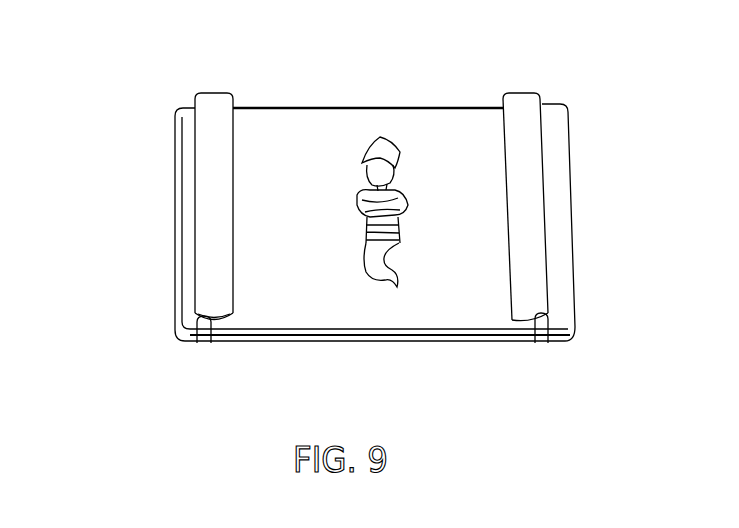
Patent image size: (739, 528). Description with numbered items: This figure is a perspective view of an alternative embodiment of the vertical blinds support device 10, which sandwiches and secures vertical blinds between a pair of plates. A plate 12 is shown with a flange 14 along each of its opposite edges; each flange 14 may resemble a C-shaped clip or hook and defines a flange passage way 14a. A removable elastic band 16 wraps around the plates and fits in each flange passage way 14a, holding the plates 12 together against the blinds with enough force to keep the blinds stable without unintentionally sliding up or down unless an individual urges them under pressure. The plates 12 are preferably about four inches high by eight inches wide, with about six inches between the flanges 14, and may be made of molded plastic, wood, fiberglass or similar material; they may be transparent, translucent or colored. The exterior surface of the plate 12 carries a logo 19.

The vertical blinds support device 10 is at (148, 50).
The plate 12 is at (193, 108).
The flange 14 is at (528, 93).
The flange passage way 14a is at (218, 323).
The elastic band 16 is at (200, 343).
The logo 19 is at (367, 230).